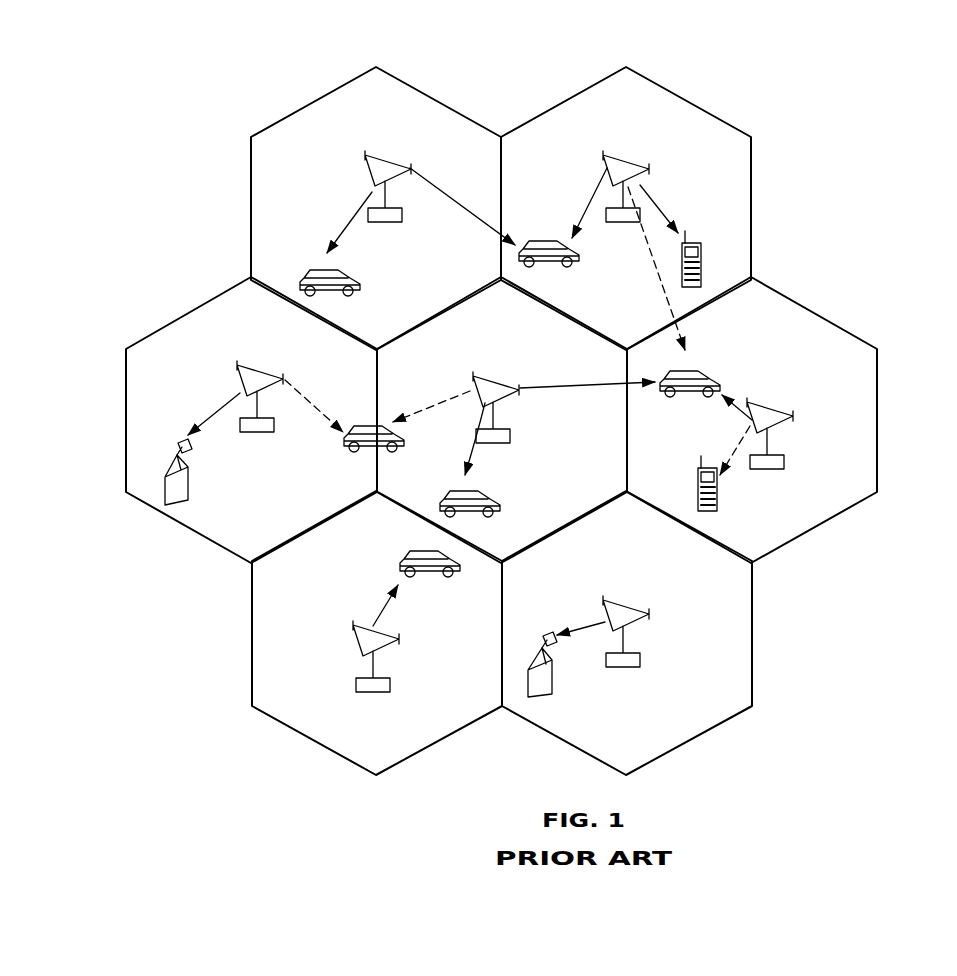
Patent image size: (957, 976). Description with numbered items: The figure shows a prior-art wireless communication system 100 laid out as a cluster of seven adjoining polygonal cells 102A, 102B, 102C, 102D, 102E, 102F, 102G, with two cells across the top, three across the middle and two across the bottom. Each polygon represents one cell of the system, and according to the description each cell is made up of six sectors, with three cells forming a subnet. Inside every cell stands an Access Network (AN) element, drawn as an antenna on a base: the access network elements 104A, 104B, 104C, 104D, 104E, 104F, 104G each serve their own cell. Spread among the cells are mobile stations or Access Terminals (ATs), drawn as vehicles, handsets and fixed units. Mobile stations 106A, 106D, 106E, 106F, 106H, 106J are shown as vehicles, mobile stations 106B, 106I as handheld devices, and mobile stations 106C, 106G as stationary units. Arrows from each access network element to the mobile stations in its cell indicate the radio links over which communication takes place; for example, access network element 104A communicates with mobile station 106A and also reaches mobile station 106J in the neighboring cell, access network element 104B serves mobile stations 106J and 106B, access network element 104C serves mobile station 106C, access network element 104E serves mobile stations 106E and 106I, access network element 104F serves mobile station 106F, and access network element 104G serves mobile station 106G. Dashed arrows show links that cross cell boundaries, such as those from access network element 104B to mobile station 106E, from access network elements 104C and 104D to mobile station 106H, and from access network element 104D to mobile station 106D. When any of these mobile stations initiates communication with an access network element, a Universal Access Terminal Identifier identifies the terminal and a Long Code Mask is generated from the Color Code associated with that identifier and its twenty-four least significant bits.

The wireless communication system 100 is at (806, 80).
The cell 102A is at (322, 94).
The cell 102B is at (683, 98).
The cell 102C is at (182, 313).
The cell 102D is at (533, 320).
The cell 102E is at (878, 417).
The cell 102F is at (253, 638).
The cell 102G is at (753, 611).
The access network element 104A is at (372, 158).
The access network element 104B is at (613, 158).
The access network element 104C is at (248, 368).
The access network element 104D is at (483, 378).
The access network element 104E is at (757, 408).
The access network element 104F is at (353, 627).
The access network element 104G is at (613, 604).
The mobile station 106A is at (327, 270).
The mobile station 106B is at (687, 241).
The mobile station 106C is at (175, 443).
The mobile station 106D is at (468, 491).
The mobile station 106E is at (693, 371).
The mobile station 106F is at (425, 551).
The mobile station 106G is at (543, 636).
The mobile station 106H is at (370, 426).
The mobile station 106I is at (702, 468).
The mobile station 106J is at (548, 242).